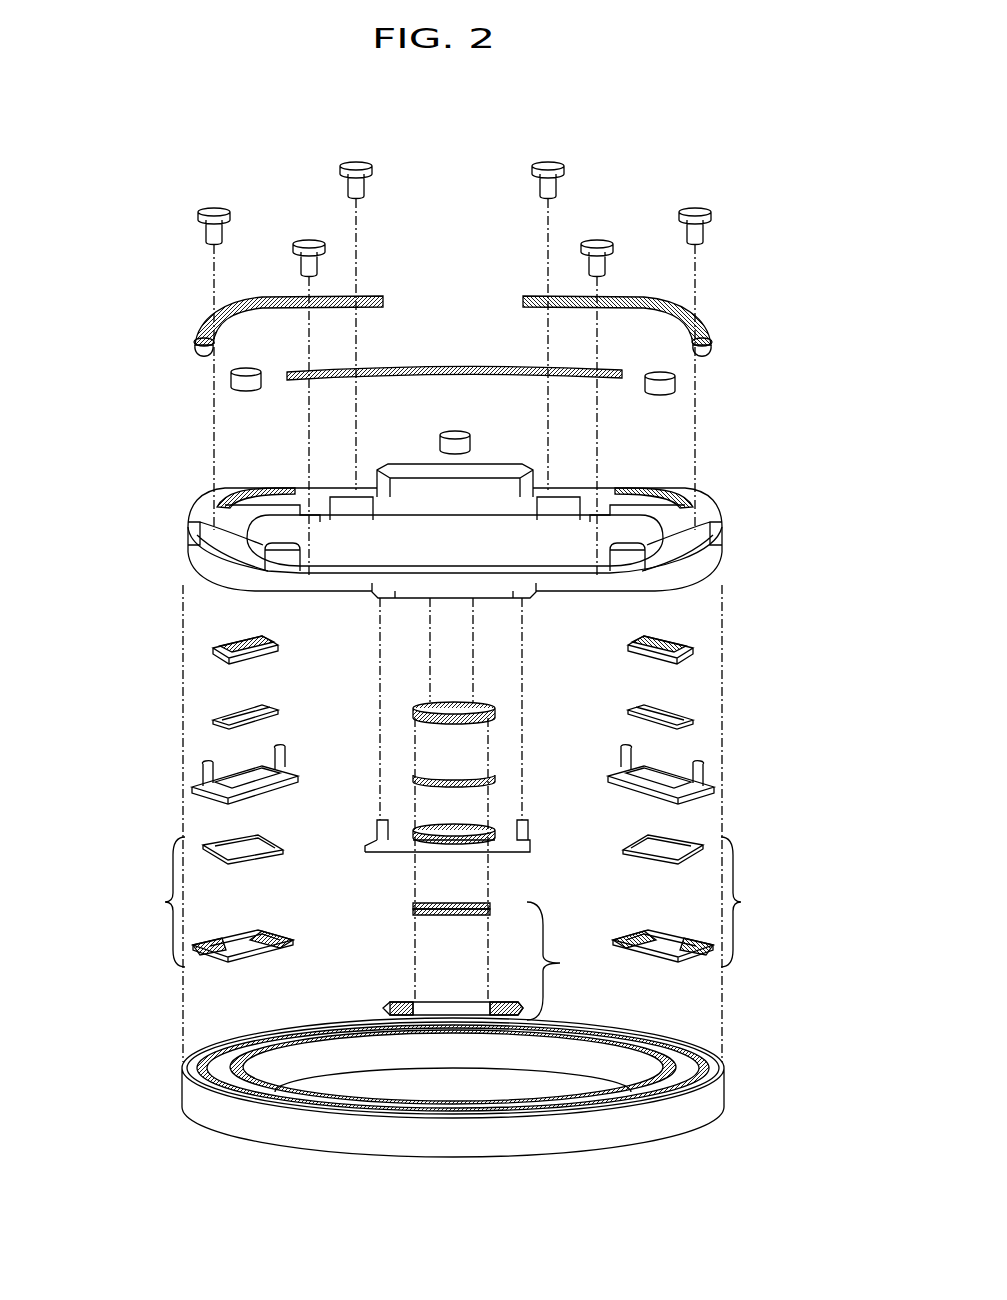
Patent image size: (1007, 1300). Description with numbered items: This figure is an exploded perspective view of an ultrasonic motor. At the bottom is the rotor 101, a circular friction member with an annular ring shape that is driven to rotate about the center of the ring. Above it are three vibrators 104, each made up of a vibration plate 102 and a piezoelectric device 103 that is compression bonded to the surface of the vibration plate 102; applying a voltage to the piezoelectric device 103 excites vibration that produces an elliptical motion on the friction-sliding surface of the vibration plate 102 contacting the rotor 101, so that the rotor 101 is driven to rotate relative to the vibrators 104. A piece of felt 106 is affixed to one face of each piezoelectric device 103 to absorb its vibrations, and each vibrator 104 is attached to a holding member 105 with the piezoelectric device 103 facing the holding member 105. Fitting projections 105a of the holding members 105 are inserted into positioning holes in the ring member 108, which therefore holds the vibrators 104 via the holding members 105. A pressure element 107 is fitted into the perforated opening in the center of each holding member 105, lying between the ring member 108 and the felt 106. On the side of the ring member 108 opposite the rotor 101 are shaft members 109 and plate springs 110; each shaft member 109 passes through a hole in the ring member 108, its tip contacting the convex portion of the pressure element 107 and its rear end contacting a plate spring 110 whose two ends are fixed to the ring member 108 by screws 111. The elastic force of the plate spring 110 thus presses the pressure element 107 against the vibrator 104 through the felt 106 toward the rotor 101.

The rotor 101 is at (373, 1150).
The vibration plate 102 is at (244, 952).
The piezoelectric device 103 is at (243, 855).
The vibrator 104 is at (165, 902).
The holding member 105 is at (250, 782).
The fitting projection 105a is at (372, 848).
The felt 106 is at (230, 716).
The pressure element 107 is at (265, 650).
The ring member 108 is at (212, 570).
The shaft member 109 is at (243, 386).
The plate spring 110 is at (205, 322).
The screw 111 is at (214, 208).